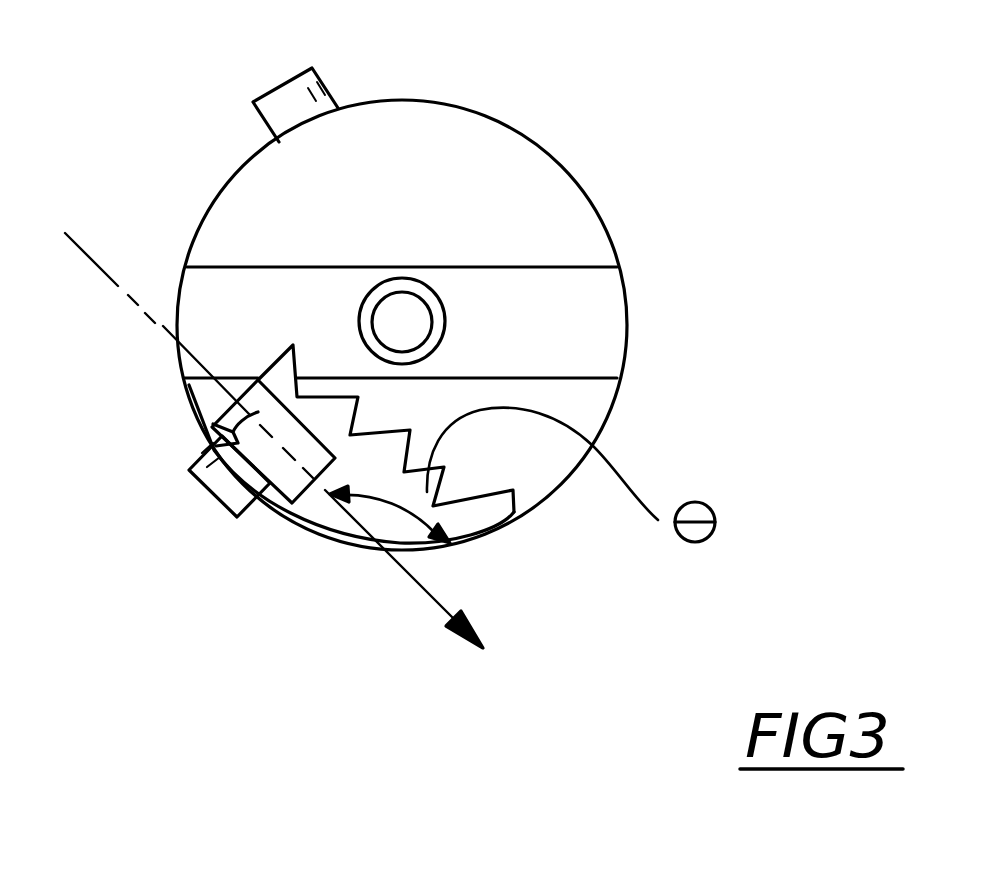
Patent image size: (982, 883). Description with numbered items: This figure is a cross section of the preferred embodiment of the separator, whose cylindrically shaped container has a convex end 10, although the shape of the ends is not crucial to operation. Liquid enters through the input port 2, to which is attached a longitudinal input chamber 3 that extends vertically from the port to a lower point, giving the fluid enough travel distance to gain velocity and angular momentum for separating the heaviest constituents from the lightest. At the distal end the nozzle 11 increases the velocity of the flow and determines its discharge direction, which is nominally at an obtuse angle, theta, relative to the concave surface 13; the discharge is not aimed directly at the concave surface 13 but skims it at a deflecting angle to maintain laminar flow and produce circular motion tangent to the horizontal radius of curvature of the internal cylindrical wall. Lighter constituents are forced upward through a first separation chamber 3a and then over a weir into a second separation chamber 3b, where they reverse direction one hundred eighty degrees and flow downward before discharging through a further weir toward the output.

The convex end 10 is at (483, 195).
The second separation chamber 3b is at (582, 314).
The first separation chamber 3a is at (533, 458).
The nozzle 11 is at (306, 495).
The input port 2 is at (211, 496).
The input chamber 3 is at (210, 418).
The concave surface 13 is at (377, 545).